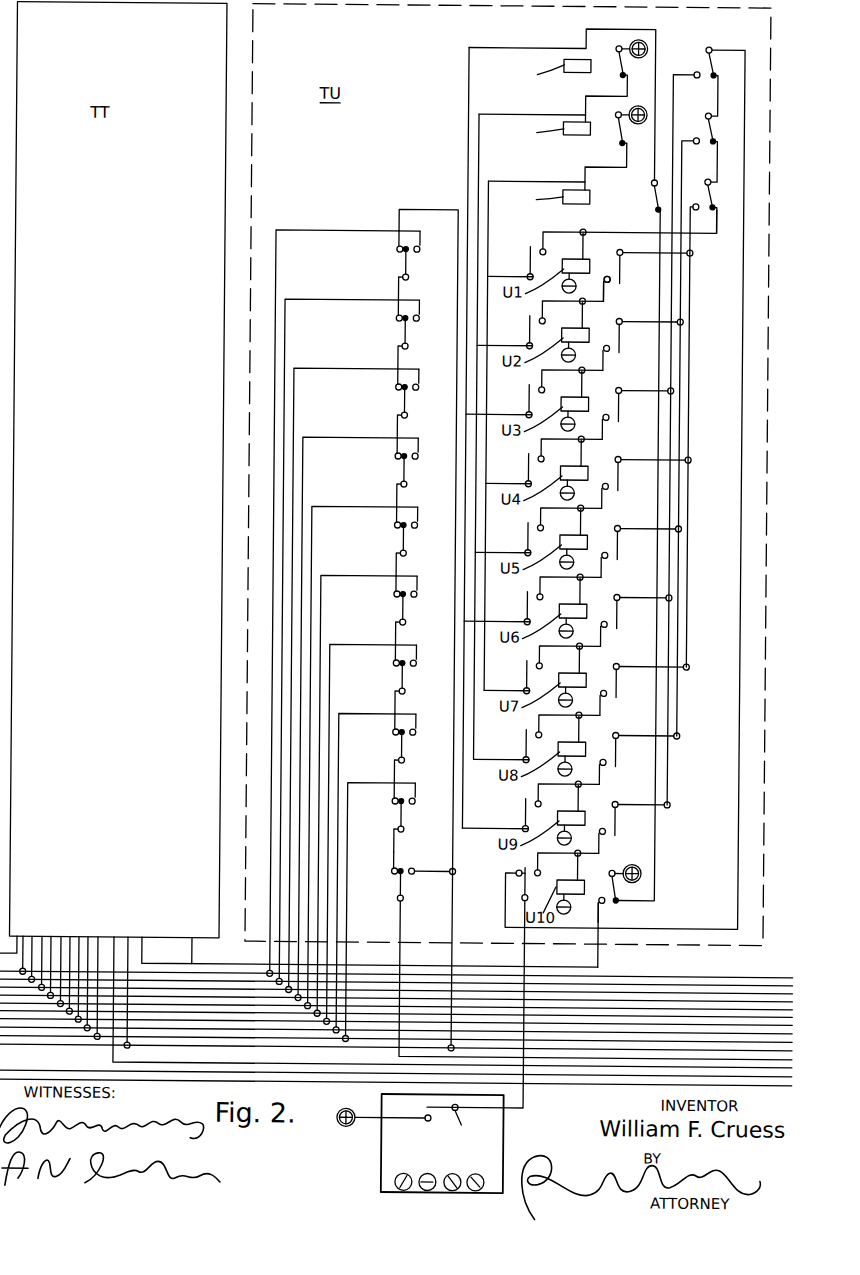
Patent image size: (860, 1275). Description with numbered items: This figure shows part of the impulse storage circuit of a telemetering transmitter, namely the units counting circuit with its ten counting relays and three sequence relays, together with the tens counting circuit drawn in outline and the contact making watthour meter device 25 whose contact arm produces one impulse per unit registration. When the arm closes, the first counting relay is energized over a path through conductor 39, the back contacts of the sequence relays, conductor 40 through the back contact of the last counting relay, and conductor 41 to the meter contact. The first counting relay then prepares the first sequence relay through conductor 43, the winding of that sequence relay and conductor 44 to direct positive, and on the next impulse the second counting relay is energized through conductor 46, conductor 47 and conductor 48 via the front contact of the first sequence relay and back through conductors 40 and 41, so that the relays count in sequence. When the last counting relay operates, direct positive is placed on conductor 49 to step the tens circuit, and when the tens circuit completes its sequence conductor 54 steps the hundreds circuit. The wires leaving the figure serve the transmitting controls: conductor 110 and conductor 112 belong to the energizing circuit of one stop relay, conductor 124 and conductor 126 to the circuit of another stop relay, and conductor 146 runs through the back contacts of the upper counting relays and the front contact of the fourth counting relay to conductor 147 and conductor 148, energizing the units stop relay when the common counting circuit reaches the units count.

The contact making watthour meter device 25 is at (390, 1156).
The conductor 39 is at (605, 227).
The conductor 40 is at (748, 316).
The conductor 41 is at (533, 1091).
The conductor 43 is at (491, 253).
The conductor 44 is at (591, 167).
The conductor 46 is at (610, 280).
The conductor 47 is at (633, 249).
The conductor 48 is at (694, 262).
The conductor 49 is at (609, 966).
The conductor 54 is at (197, 940).
The conductor 110 is at (628, 1083).
The conductor 112 is at (700, 981).
The conductor 124 is at (80, 1067).
The conductor 126 is at (746, 988).
The conductor 146 is at (409, 952).
The conductor 147 is at (344, 435).
The conductor 148 is at (636, 995).